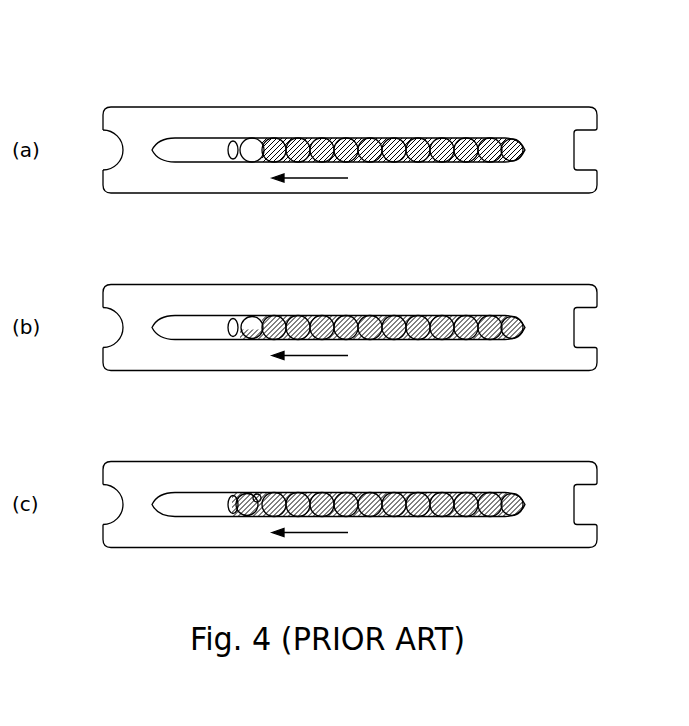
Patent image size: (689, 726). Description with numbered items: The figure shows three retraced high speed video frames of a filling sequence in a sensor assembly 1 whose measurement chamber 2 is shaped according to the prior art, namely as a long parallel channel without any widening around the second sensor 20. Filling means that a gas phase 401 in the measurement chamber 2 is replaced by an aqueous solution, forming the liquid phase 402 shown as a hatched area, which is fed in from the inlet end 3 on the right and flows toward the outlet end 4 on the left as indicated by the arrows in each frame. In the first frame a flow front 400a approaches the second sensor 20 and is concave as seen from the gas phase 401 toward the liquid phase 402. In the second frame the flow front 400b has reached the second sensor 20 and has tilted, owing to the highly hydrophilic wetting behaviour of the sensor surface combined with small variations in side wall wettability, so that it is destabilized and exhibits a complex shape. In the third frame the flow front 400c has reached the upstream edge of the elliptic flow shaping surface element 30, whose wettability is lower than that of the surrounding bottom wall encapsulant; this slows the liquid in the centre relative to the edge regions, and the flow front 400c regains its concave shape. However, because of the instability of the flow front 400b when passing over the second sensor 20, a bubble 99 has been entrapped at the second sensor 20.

The sensor assembly 1 is at (101, 150).
The measurement chamber 2 is at (170, 150).
The inlet end 3 is at (557, 105).
The outlet end 4 is at (112, 106).
The second sensor 20 is at (253, 148).
The flow shaping surface element 30 is at (235, 141).
The bubble 99 is at (258, 496).
The flow front 400a is at (282, 138).
The flow front 400b is at (263, 318).
The flow front 400c is at (232, 493).
The gas phase 401 is at (207, 150).
The liquid phase 402 is at (370, 148).